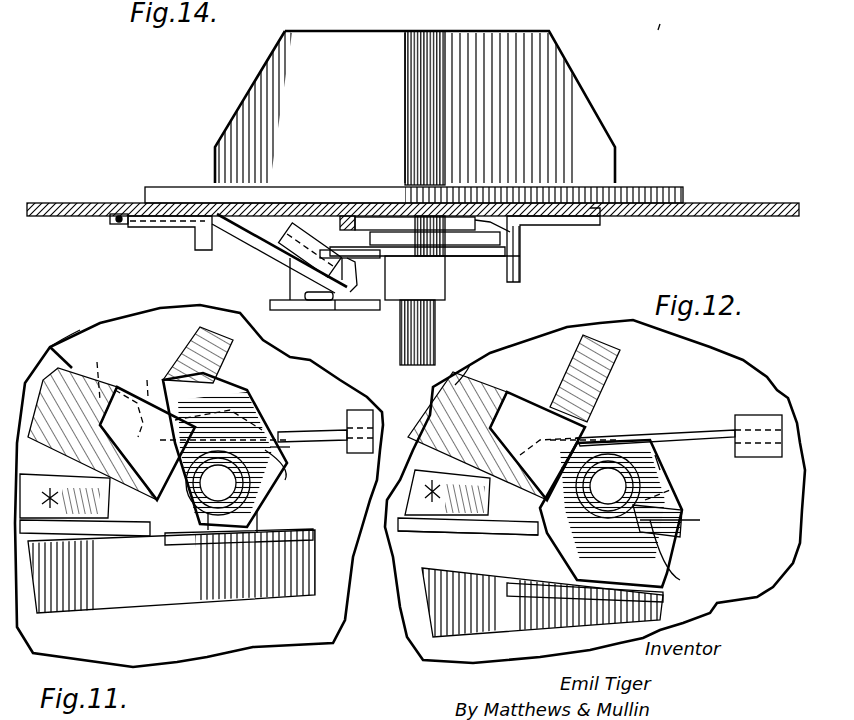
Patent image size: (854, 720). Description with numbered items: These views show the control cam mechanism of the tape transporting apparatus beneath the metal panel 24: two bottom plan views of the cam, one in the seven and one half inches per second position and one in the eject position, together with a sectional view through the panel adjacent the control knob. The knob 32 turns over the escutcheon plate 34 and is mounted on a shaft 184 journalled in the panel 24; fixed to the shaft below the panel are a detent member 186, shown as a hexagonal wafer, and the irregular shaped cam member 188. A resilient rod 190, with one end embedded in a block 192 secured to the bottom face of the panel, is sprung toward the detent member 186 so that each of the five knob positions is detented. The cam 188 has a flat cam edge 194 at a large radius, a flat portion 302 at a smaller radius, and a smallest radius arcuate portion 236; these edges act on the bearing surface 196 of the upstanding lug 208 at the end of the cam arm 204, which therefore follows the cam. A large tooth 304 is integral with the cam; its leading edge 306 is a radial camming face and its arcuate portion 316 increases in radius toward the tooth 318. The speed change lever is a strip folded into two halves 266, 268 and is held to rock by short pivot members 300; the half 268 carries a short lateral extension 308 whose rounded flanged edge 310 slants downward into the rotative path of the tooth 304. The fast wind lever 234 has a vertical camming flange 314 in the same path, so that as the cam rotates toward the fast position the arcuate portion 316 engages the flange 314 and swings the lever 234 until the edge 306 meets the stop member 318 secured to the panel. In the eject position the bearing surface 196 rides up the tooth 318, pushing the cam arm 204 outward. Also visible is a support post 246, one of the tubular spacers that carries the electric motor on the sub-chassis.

In FIG. 14, the metal panel 24 is at (88, 203).
In FIG. 14, the knob 32 is at (585, 102).
In FIG. 14, the escutcheon plate 34 is at (660, 187).
In FIG. 14, the shaft 184 is at (440, 343).
In FIG. 11, the shaft 184 is at (240, 490).
In FIG. 12, the shaft 184 is at (640, 500).
In FIG. 14, the detent member 186 is at (507, 238).
In FIG. 11, the detent member 186 is at (298, 415).
In FIG. 12, the detent member 186 is at (665, 495).
In FIG. 14, the cam member 188 is at (485, 257).
In FIG. 11, the cam member 188 is at (238, 428).
In FIG. 12, the cam member 188 is at (660, 466).
In FIG. 14, the resilient rod 190 is at (300, 262).
In FIG. 11, the resilient rod 190 is at (337, 430).
In FIG. 12, the resilient rod 190 is at (707, 430).
In FIG. 11, the block 192 is at (372, 415).
In FIG. 12, the block 192 is at (765, 420).
In FIG. 11, the flat cam edge 194 is at (275, 467).
In FIG. 12, the flat cam edge 194 is at (560, 555).
In FIG. 11, the bearing surface 196 is at (300, 528).
In FIG. 12, the bearing surface 196 is at (470, 557).
In FIG. 14, the cam arm 204 is at (588, 226).
In FIG. 11, the cam arm 204 is at (167, 597).
In FIG. 12, the cam arm 204 is at (460, 635).
In FIG. 14, the lug 208 is at (520, 265).
In FIG. 11, the lug 208 is at (257, 533).
In FIG. 12, the lug 208 is at (520, 630).
In FIG. 14, the fast wind lever 234 is at (330, 312).
In FIG. 11, the fast wind lever 234 is at (62, 330).
In FIG. 12, the fast wind lever 234 is at (475, 350).
In FIG. 11, the arcuate portion 236 is at (208, 530).
In FIG. 12, the arcuate portion 236 is at (630, 440).
In FIG. 14, the support post 246 is at (677, 15).
In FIG. 14, the elongate half 266 is at (118, 224).
In FIG. 14, the elongate half 268 is at (232, 236).
In FIG. 14, the pivot member 300 is at (195, 238).
In FIG. 11, the flat portion 302 is at (270, 500).
In FIG. 12, the flat portion 302 is at (540, 500).
In FIG. 12, the tooth 304 is at (685, 520).
In FIG. 12, the leading edge 306 is at (690, 515).
In FIG. 14, the lateral extension 308 is at (278, 252).
In FIG. 11, the lateral extension 308 is at (190, 370).
In FIG. 12, the lateral extension 308 is at (560, 385).
In FIG. 14, the rounded flanged edge 310 is at (312, 212).
In FIG. 11, the rounded flanged edge 310 is at (230, 355).
In FIG. 12, the rounded flanged edge 310 is at (615, 372).
In FIG. 14, the camming flange 314 is at (300, 310).
In FIG. 11, the camming flange 314 is at (95, 390).
In FIG. 12, the camming flange 314 is at (495, 410).
In FIG. 11, the arcuate portion 316 is at (155, 390).
In FIG. 12, the arcuate portion 316 is at (683, 575).
In FIG. 11, the stop member 318 is at (102, 523).
In FIG. 12, the stop member 318 is at (730, 605).